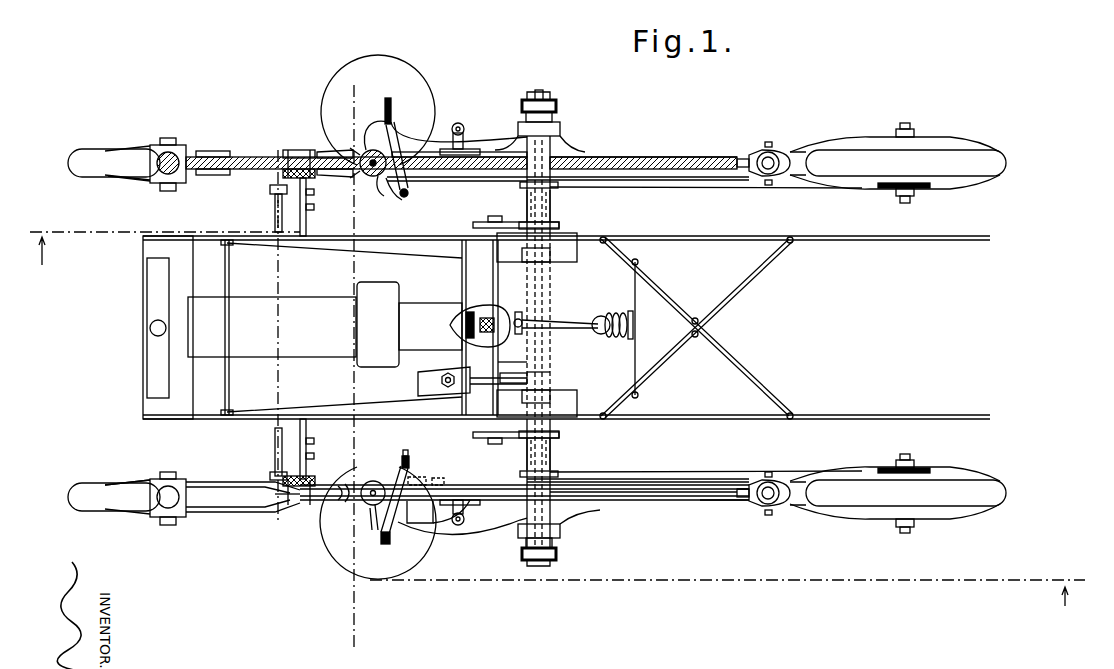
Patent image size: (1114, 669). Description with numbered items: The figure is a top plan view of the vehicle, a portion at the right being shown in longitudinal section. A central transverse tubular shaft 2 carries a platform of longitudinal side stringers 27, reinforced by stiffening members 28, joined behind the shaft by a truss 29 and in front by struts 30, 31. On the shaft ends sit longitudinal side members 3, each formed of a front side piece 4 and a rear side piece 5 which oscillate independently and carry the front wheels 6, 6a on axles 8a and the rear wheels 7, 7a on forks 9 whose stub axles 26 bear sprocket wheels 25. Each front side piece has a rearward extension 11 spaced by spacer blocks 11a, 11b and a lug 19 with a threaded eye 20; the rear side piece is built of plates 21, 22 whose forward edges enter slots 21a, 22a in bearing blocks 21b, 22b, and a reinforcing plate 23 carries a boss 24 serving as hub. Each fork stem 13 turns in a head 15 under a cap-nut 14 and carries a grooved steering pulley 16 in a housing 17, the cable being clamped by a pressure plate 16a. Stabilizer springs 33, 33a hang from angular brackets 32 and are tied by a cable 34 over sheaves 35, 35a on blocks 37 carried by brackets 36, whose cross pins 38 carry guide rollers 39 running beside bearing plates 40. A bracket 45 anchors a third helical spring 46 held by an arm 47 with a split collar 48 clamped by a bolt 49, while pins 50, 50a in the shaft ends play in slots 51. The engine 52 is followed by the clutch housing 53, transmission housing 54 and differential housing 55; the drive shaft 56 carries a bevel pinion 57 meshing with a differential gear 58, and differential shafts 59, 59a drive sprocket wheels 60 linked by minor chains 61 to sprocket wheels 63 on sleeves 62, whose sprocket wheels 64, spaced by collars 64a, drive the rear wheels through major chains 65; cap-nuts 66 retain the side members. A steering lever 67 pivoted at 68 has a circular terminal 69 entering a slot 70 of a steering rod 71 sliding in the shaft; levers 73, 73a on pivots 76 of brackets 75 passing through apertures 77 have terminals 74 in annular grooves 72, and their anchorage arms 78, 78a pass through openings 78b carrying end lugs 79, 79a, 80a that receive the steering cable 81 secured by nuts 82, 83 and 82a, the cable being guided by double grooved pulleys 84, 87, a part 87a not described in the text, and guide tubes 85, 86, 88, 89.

The transverse tubular shaft 2 is at (553, 290).
The longitudinal side member 3 is at (374, 99).
The front side piece 4 is at (256, 157).
The rear side piece 5 is at (470, 178).
The front wheel 6 is at (110, 500).
The front wheel 6a is at (92, 160).
The rear wheel 7 is at (980, 494).
The rear wheel 7a is at (973, 158).
The front wheel axle 8a is at (167, 192).
The fork 9 is at (814, 178).
The rearward extension 11 is at (672, 158).
The spacer block 11a is at (735, 501).
The spacer block 11b is at (742, 488).
The stem 13 is at (177, 150).
The cap-nut 14 is at (633, 295).
The head 15 is at (150, 482).
The grooved steering pulley 16 is at (165, 140).
The pressure plate 16a is at (150, 182).
The housing 17 is at (140, 150).
The lug 19 is at (757, 152).
The threaded eye 20 is at (776, 155).
The plate 21 is at (702, 181).
The vertical slot 21a is at (425, 474).
The bearing block 21b is at (440, 480).
The plate 22 is at (736, 160).
The vertical slot 22a is at (432, 524).
The bearing block 22b is at (415, 514).
The reinforcing plate 23 is at (646, 157).
The boss 24 is at (560, 128).
The sprocket wheel 25 is at (920, 186).
The stub axle 26 is at (905, 203).
The side stringer 27 is at (655, 222).
The stiffening member 28 is at (418, 255).
The truss 29 is at (712, 312).
The strut 30 is at (229, 272).
The strut 31 is at (463, 272).
The angular bracket 32 is at (262, 483).
The helical stabilizer spring 33 is at (278, 506).
The helical stabilizer spring 33a is at (275, 200).
The flexible connecting line or cable 34 is at (280, 277).
The sheave 35 is at (275, 436).
The sheave 35a is at (275, 218).
The bracket 36 is at (312, 208).
The block or support 37 is at (306, 188).
The cross pin 38 is at (301, 150).
The anti-friction guide roller 39 is at (290, 155).
The bearing plate 40 is at (283, 174).
The bracket 45 is at (626, 339).
The helical stabilizer spring 46 is at (598, 317).
The arm 47 is at (565, 329).
The split collar 48 is at (518, 318).
The bolt 49 is at (519, 334).
The pin 50 is at (535, 560).
The pin 50a is at (560, 104).
The transverse slot 51 is at (553, 117).
The engine 52 is at (272, 327).
The housing 53 is at (378, 288).
The transmission housing 54 is at (424, 312).
The differential housing 55 is at (498, 302).
The drive shaft 56 is at (450, 325).
The bevel pinion 57 is at (470, 310).
The differential gear 58 is at (485, 334).
The differential shaft 59 is at (522, 362).
The differential shaft 59a is at (522, 258).
The sprocket wheel 60 is at (478, 222).
The minor sprocket chain 61 is at (505, 215).
The sleeve 62 is at (551, 215).
The sprocket wheel 63 is at (559, 226).
The sprocket wheel 64 is at (551, 200).
The spacing collar 64a is at (520, 185).
The major drive chain 65 is at (758, 193).
The cap-nut 66 is at (526, 105).
The steering lever 67 is at (422, 393).
The pivot 68 is at (446, 388).
The circular terminal 69 is at (530, 382).
The slot 70 is at (551, 378).
The steering rod 71 is at (551, 370).
The annular groove 72 is at (566, 134).
The lever 73 is at (474, 528).
The lever 73a is at (470, 149).
The circular terminal 74 is at (536, 104).
The bracket 75 is at (455, 135).
The pivot 76 is at (459, 123).
The aperture 77 is at (505, 152).
The anchorage arm 78 is at (392, 490).
The anchorage arm 78a is at (386, 134).
The opening 78b is at (382, 197).
The end lug 79 is at (374, 545).
The end lug 79a is at (410, 448).
The end lug 80a is at (412, 132).
The steering cable 81 is at (362, 154).
The nut 82 is at (386, 545).
The nut 82a is at (409, 194).
The nut 83 is at (385, 106).
The double grooved pulley 84 is at (370, 177).
The guide tube 85 is at (208, 176).
The guide tube 86 is at (212, 151).
The double grooved pulley 87 is at (368, 505).
The bolt head 87a is at (270, 188).
The guide tube 88 is at (345, 506).
The guide tube 89 is at (350, 484).